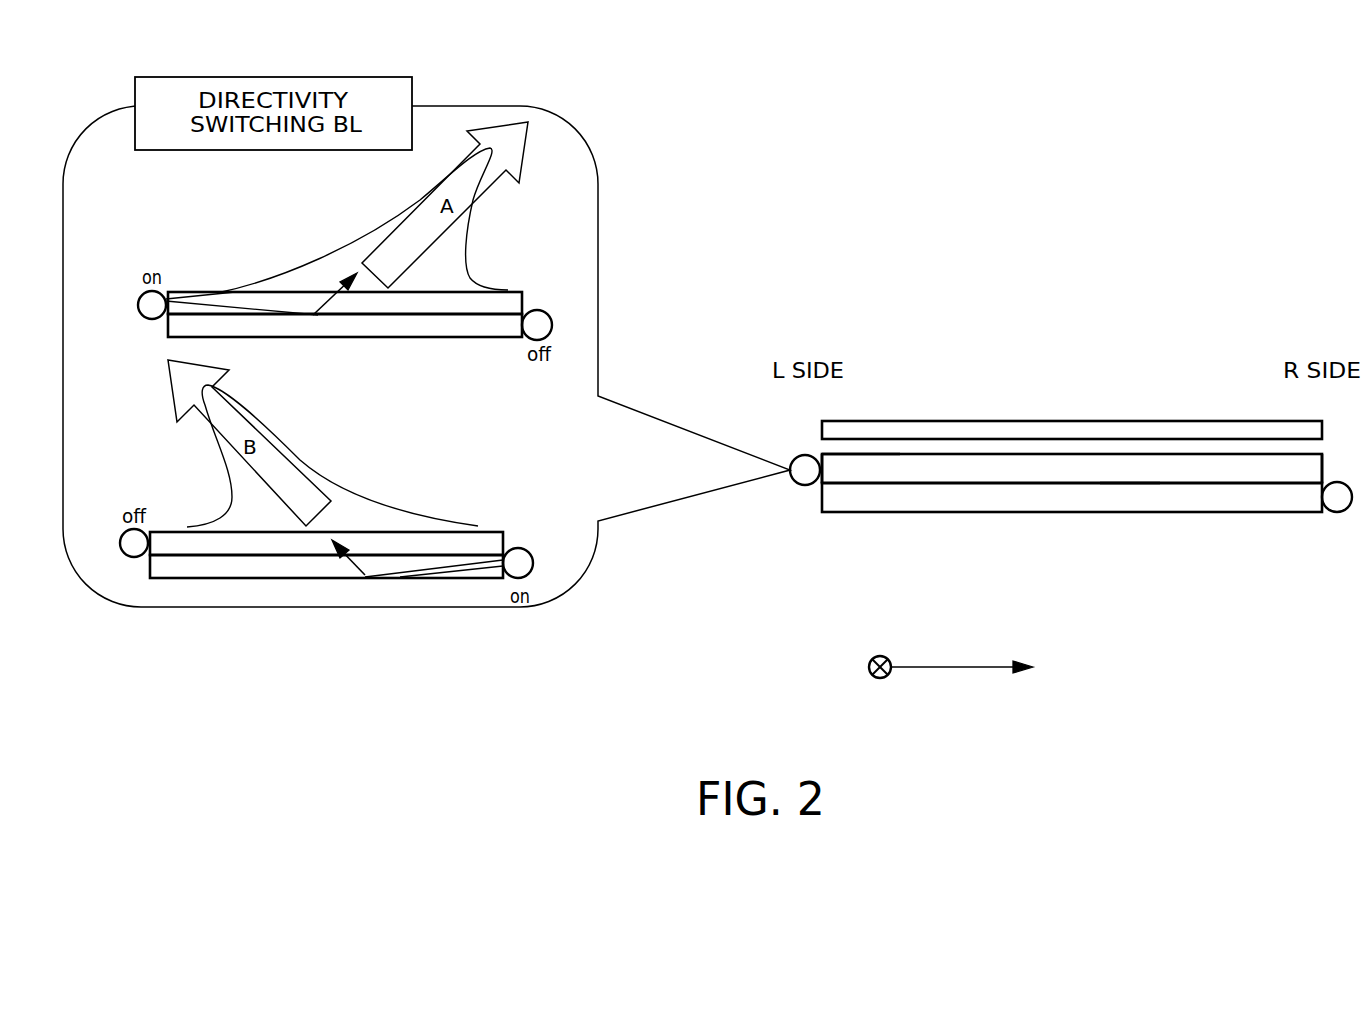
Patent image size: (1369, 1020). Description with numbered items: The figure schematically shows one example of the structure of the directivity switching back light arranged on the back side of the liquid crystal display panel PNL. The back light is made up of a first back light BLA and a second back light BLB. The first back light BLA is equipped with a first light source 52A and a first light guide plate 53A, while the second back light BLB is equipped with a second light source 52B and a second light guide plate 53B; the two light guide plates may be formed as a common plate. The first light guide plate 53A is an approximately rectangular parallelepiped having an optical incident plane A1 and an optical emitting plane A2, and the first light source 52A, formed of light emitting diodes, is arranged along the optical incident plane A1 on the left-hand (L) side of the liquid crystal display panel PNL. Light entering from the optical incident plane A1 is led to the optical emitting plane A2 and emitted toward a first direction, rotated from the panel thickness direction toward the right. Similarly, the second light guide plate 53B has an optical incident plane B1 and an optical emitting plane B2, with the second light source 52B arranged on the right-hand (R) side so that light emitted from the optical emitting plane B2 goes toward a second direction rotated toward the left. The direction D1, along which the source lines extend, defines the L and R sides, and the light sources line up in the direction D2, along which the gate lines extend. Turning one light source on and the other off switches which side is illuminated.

The first light source 52A is at (152, 320).
The second light source 52B is at (537, 310).
The first light guide plate 53A is at (372, 318).
The second light guide plate 53B is at (466, 330).
The liquid crystal display panel PNL is at (1041, 418).
The optical incident plane A1 is at (808, 455).
The optical emitting plane A2 is at (877, 456).
The optical incident plane B1 is at (1331, 482).
The optical emitting plane B2 is at (1128, 486).
The first back light BLA is at (892, 584).
The second back light BLB is at (1368, 582).
The direction D1 is at (962, 650).
The direction D2 is at (880, 679).